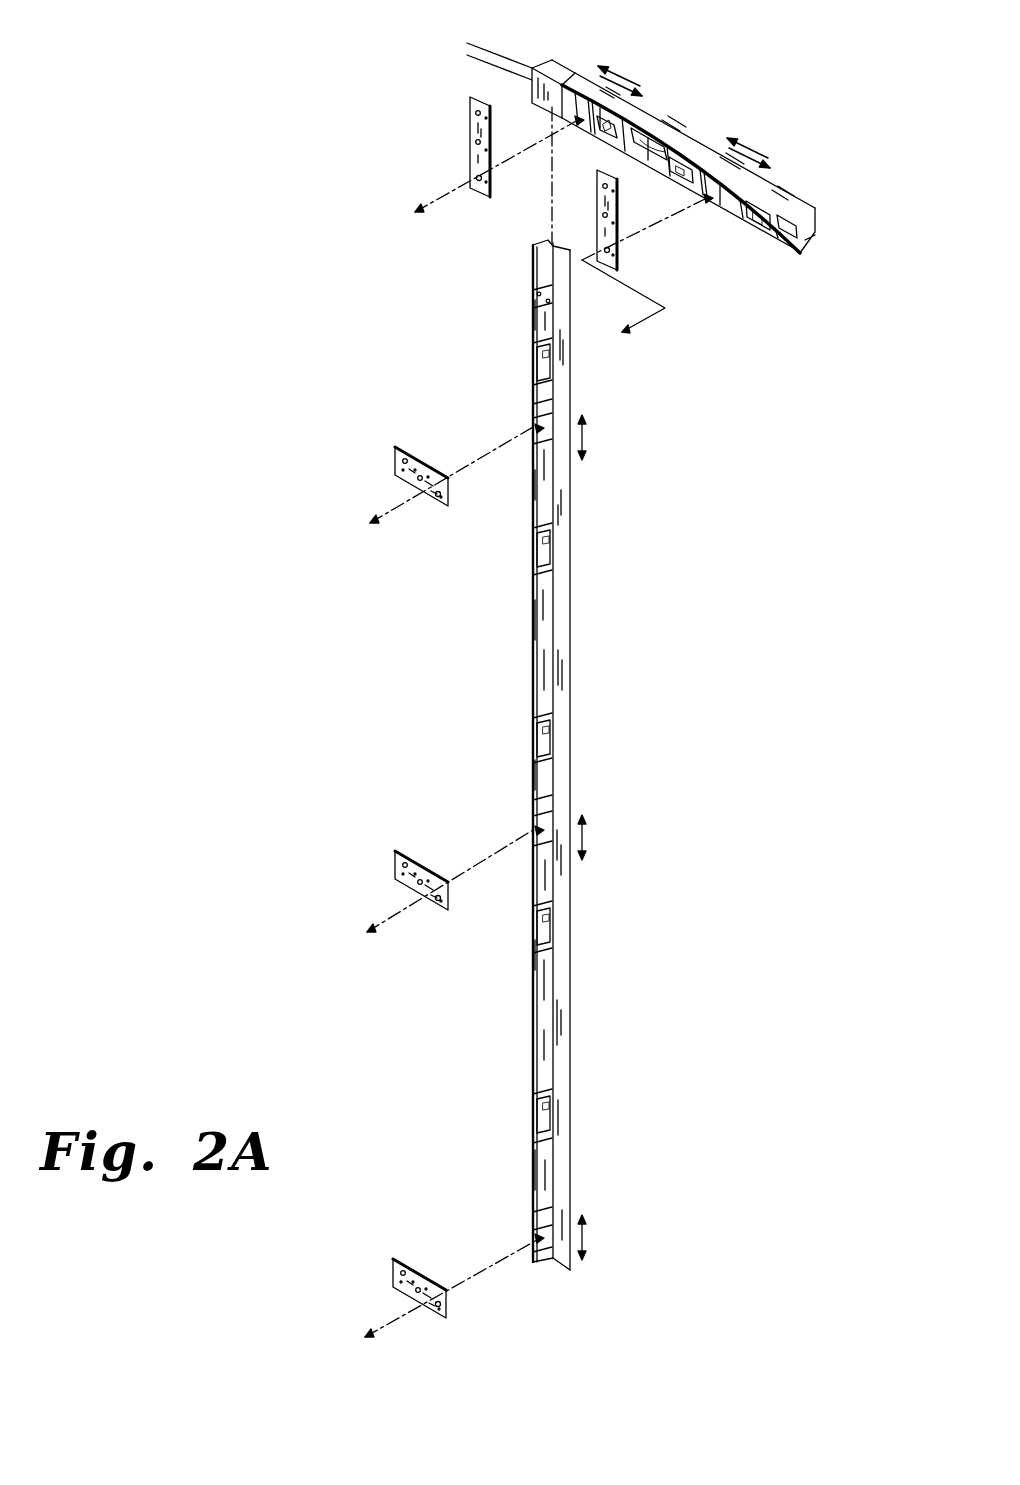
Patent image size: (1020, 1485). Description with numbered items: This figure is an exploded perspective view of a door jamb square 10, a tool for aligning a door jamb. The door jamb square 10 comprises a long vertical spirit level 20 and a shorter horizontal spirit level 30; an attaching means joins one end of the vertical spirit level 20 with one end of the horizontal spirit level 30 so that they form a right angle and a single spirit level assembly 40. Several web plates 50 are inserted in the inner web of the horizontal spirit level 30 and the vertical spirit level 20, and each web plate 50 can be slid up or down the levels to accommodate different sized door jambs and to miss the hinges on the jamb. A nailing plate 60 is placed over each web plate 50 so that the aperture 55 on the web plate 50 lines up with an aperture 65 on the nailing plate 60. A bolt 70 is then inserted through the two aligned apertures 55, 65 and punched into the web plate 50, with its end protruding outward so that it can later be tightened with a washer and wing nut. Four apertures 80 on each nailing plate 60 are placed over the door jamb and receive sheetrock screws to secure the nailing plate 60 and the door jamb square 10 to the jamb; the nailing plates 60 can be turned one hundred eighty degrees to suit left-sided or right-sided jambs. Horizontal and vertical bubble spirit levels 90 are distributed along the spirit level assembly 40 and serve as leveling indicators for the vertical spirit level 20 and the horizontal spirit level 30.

The door jamb square 10 is at (768, 131).
The vertical spirit level 20 is at (570, 366).
The horizontal spirit level 30 is at (826, 165).
The spirit level assembly 40 is at (433, 78).
The web plate 50 is at (718, 210).
The aperture on web plate 55 is at (578, 124).
The nailing plate 60 is at (458, 158).
The aperture on nailing plate 65 is at (479, 180).
The bolt 70 is at (416, 218).
The apertures on nailing plate 80 is at (472, 108).
The bubble spirit levels 90 is at (665, 150).